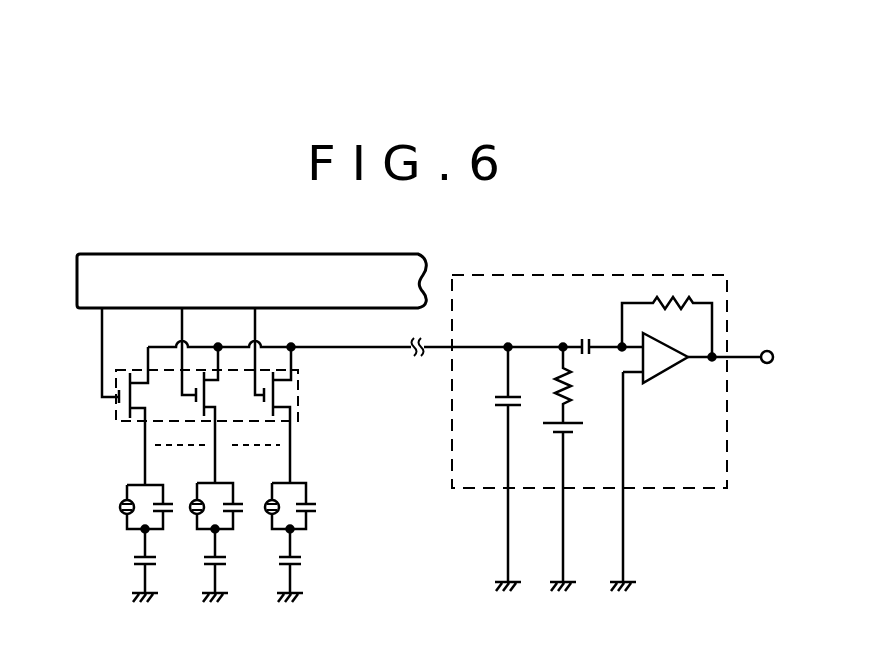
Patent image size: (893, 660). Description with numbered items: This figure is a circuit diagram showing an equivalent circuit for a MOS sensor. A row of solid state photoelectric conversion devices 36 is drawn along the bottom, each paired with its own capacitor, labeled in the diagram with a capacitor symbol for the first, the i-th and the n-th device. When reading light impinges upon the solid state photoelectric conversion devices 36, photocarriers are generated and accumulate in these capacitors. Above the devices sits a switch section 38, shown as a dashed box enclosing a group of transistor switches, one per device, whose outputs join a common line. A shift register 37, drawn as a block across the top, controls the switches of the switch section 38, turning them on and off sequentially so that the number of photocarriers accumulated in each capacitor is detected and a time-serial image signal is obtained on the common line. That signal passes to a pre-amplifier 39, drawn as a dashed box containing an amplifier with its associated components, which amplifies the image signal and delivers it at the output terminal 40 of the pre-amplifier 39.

The solid state photoelectric conversion device 36 is at (118, 538).
The shift register 37 is at (88, 311).
The switch section 38 is at (116, 418).
The pre-amplifier 39 is at (673, 488).
The output terminal 40 is at (773, 355).